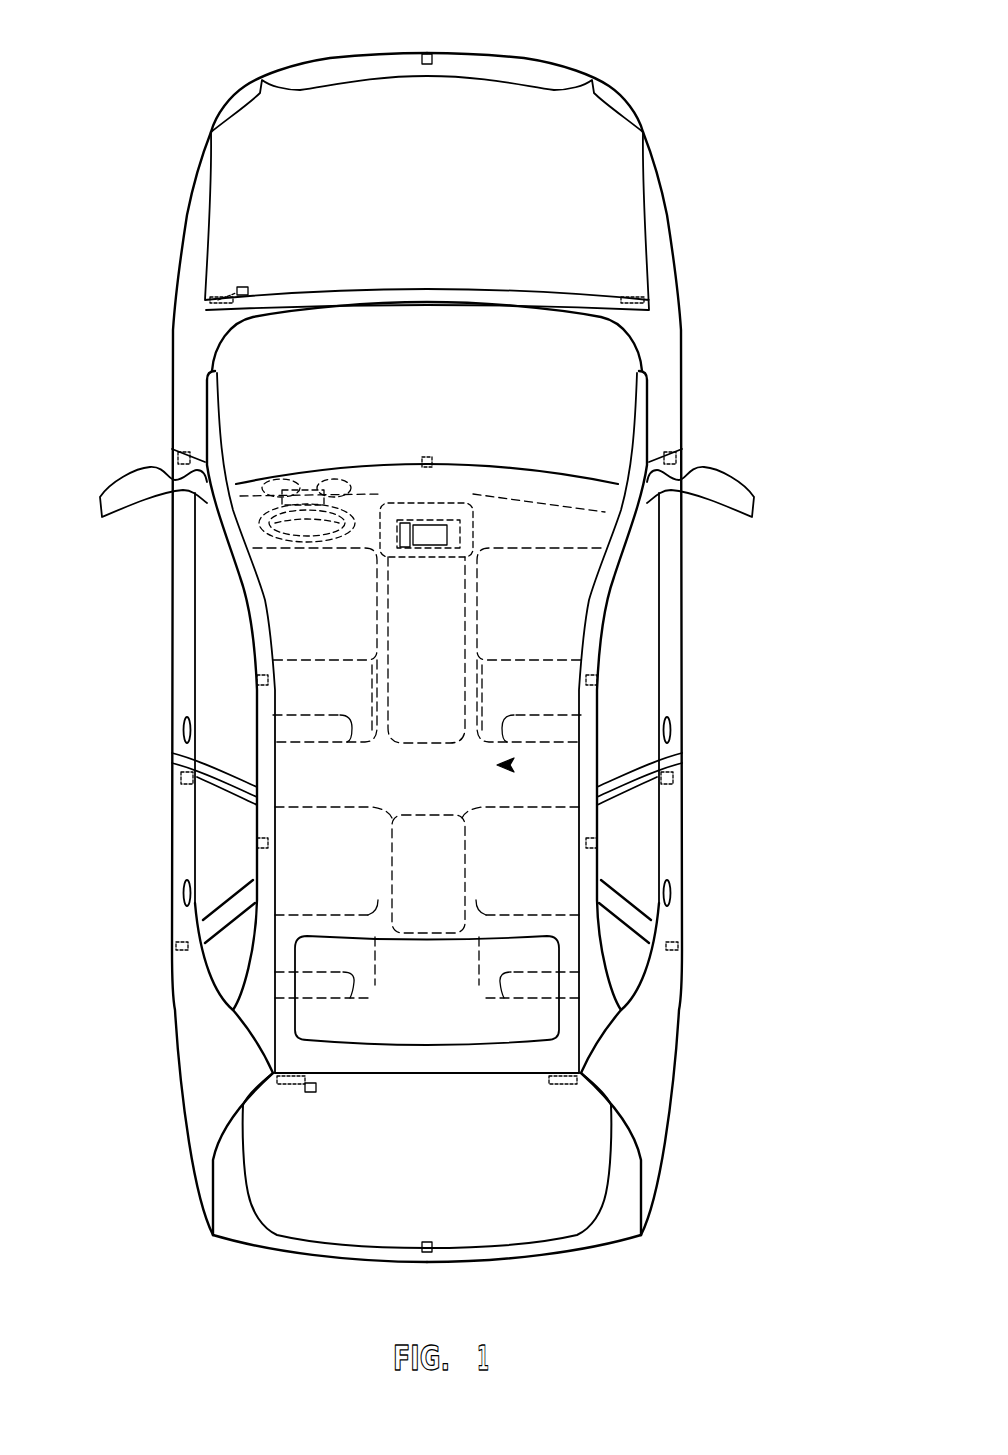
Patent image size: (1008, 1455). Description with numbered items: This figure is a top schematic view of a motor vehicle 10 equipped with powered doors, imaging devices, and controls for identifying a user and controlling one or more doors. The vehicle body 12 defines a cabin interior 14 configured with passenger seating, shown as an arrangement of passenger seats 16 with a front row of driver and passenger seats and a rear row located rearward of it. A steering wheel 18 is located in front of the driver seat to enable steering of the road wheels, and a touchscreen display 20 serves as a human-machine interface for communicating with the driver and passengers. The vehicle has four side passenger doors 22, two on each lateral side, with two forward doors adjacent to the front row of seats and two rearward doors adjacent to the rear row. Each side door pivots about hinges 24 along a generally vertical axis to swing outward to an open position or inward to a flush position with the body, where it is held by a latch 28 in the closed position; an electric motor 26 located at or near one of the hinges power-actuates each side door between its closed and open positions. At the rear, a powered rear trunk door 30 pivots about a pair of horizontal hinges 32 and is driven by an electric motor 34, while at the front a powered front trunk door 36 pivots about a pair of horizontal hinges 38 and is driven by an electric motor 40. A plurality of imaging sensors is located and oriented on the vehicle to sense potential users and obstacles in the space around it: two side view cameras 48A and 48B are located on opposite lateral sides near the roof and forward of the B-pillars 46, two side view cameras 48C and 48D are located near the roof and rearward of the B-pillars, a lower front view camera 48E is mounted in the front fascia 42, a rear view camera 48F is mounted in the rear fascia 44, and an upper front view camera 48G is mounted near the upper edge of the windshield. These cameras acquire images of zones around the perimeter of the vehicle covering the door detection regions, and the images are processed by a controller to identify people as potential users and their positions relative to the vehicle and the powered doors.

The motor vehicle 10 is at (750, 68).
The vehicle body 12 is at (200, 987).
The cabin interior 14 is at (500, 765).
The passenger seats 16 is at (294, 615).
The steering wheel 18 is at (248, 478).
The touchscreen display 20 is at (467, 537).
The side passenger doors 22 is at (185, 556).
The hinges 24 is at (180, 440).
The electric motor 26 is at (175, 455).
The latch 28 is at (183, 760).
The rear trunk door 30 is at (560, 1140).
The horizontal hinges 32 is at (277, 1085).
The electric motor 34 is at (312, 1085).
The front trunk door 36 is at (548, 183).
The horizontal hinges 38 is at (230, 293).
The electric motor 40 is at (240, 287).
The front fascia 42 is at (289, 65).
The rear fascia 44 is at (312, 1260).
The B-pillars 46 is at (228, 790).
The side view camera 48A is at (255, 665).
The side view camera 48B is at (598, 665).
The side view camera 48C is at (257, 847).
The side view camera 48D is at (602, 847).
The lower front view camera 48E is at (430, 53).
The rear view camera 48F is at (439, 1247).
The upper front view camera 48G is at (433, 458).